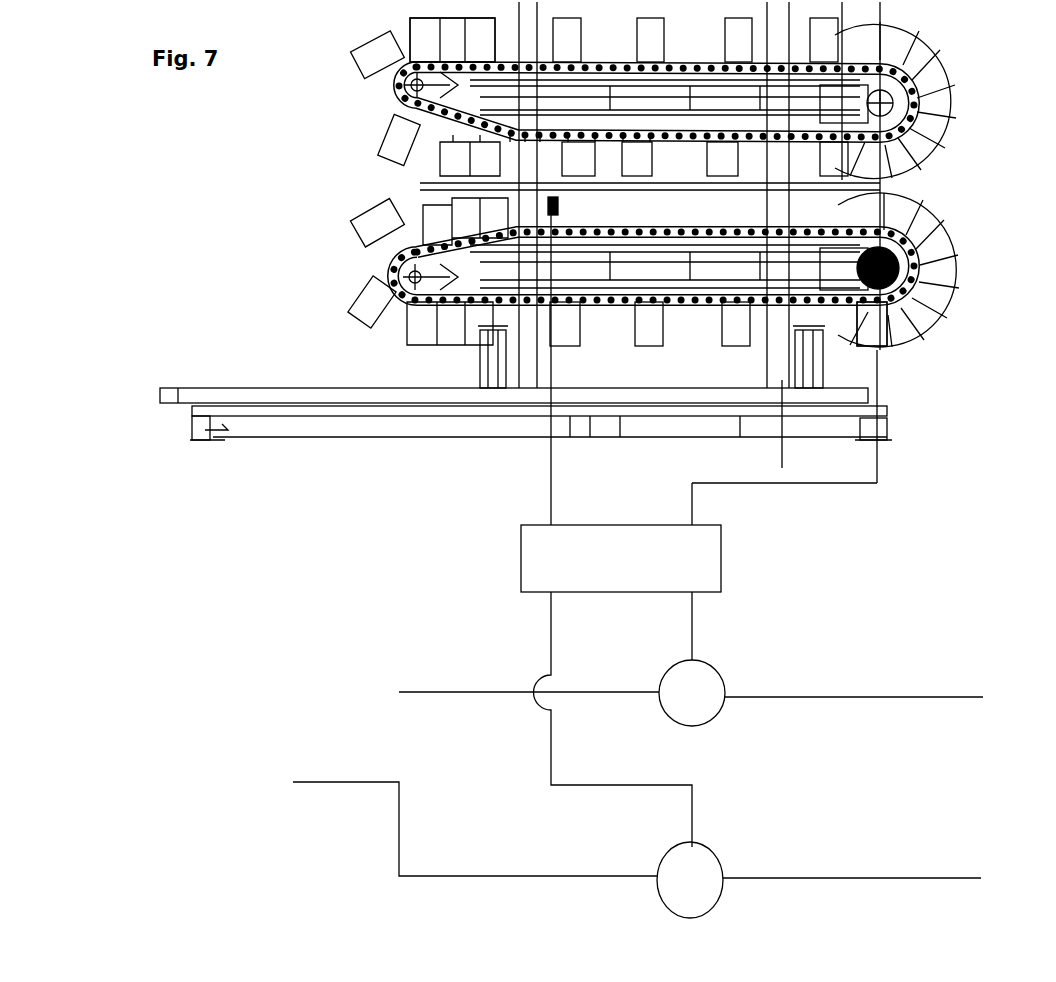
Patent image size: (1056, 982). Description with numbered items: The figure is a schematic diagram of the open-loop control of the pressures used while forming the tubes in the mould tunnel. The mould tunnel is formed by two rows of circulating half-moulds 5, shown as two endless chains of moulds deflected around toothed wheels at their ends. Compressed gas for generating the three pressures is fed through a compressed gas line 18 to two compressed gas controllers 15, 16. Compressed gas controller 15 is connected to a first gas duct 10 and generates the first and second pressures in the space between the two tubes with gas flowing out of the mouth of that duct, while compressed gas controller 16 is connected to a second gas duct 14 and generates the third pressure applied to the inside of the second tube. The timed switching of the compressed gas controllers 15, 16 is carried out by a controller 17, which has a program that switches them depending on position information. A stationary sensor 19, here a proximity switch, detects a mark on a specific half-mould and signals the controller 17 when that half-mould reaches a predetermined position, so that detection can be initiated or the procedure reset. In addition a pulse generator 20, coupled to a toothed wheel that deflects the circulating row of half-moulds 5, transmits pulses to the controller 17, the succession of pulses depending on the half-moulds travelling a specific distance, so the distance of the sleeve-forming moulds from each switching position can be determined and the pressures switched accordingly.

The half-moulds 5 is at (370, 62).
The first gas duct 10 is at (951, 695).
The second gas duct 14 is at (958, 876).
The compressed gas controller 15 is at (692, 693).
The compressed gas controller 16 is at (690, 880).
The controller 17 is at (621, 558).
The compressed gas line 18 is at (303, 782).
The sensor 19 is at (545, 203).
The pulse generator 20 is at (905, 240).